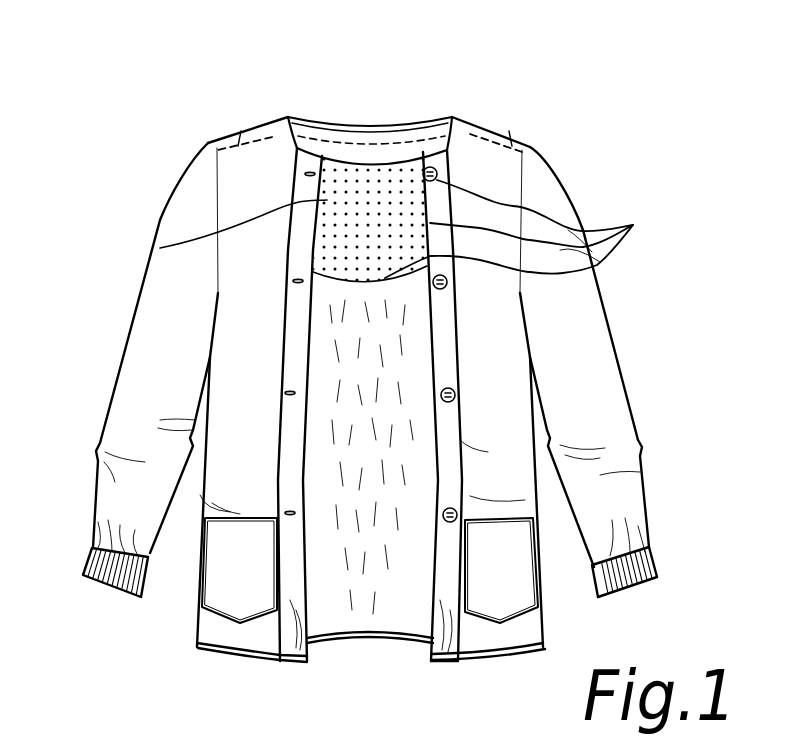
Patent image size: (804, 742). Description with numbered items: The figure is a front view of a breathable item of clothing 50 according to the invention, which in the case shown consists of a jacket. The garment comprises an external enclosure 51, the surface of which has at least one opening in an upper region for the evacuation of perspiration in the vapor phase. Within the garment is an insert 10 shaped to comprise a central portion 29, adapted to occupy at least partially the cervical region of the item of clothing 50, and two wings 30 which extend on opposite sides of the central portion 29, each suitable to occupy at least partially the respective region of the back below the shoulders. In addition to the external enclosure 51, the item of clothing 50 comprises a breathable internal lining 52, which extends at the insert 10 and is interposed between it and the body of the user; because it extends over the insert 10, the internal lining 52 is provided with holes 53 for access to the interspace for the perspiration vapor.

The insert 10 is at (347, 120).
The central portion 29 is at (390, 128).
The wings 30 is at (240, 138).
The item of clothing 50 is at (123, 193).
The external enclosure 51 is at (612, 410).
The internal lining 52 is at (160, 248).
The holes 53 is at (528, 229).